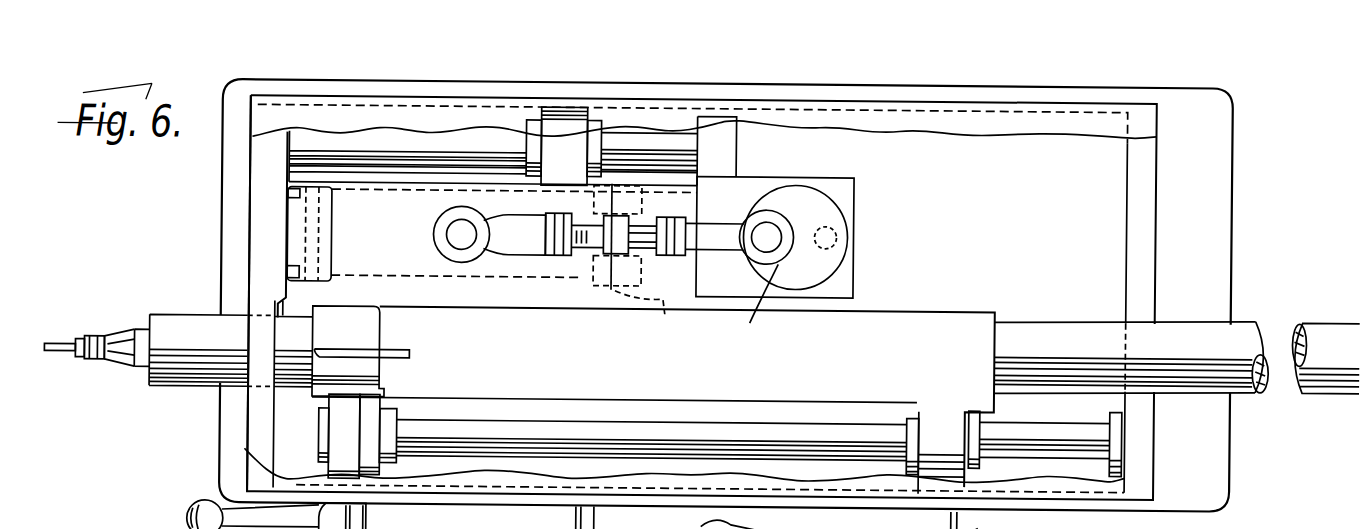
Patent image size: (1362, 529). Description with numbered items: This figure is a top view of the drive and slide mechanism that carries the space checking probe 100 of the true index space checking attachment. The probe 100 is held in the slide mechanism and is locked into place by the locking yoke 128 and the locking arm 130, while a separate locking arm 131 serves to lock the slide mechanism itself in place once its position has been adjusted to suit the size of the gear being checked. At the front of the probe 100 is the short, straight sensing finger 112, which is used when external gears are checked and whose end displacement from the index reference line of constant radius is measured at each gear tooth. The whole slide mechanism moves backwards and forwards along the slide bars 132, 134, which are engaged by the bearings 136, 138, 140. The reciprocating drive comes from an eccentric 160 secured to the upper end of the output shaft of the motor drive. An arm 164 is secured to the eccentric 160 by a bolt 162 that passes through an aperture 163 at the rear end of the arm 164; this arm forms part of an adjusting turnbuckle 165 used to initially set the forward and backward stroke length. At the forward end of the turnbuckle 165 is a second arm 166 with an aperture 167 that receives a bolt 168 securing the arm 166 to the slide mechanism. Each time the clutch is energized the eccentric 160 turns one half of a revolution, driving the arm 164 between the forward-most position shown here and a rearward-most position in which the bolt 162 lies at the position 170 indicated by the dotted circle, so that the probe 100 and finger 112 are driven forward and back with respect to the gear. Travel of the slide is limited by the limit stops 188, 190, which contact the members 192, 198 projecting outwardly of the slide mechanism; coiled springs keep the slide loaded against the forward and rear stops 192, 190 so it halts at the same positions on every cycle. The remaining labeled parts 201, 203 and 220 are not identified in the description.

The space checking probe 100 is at (183, 375).
The sensing finger 112 is at (62, 345).
The locking yoke 128 is at (368, 373).
The locking arm 130 is at (193, 519).
The locking arm 131 is at (752, 524).
The slide bar 132 is at (687, 430).
The slide bar 134 is at (403, 143).
The bearing 136 is at (506, 125).
The bearing 138 is at (393, 462).
The bearing 140 is at (912, 437).
The eccentric 160 is at (822, 206).
The bolt 162 is at (769, 228).
The aperture 163 is at (740, 337).
The arm 164 is at (687, 246).
The adjusting turnbuckle 165 is at (587, 252).
The second arm 166 is at (505, 253).
The aperture 167 is at (468, 229).
The bolt 168 is at (442, 249).
The position 170 is at (840, 237).
The limit stop 188 is at (288, 259).
The limit stop 190 is at (691, 177).
The member 192 is at (297, 243).
The member 198 is at (625, 214).
The pin 201 is at (298, 212).
The spring 203 is at (640, 199).
The handle 220 is at (1268, 527).